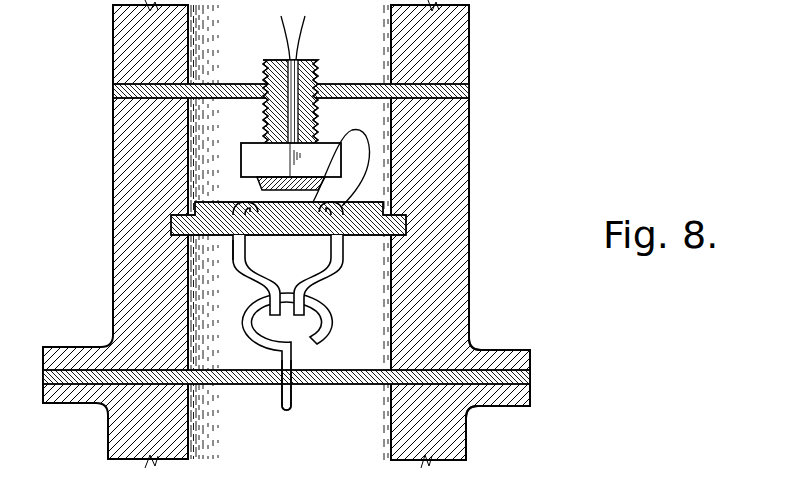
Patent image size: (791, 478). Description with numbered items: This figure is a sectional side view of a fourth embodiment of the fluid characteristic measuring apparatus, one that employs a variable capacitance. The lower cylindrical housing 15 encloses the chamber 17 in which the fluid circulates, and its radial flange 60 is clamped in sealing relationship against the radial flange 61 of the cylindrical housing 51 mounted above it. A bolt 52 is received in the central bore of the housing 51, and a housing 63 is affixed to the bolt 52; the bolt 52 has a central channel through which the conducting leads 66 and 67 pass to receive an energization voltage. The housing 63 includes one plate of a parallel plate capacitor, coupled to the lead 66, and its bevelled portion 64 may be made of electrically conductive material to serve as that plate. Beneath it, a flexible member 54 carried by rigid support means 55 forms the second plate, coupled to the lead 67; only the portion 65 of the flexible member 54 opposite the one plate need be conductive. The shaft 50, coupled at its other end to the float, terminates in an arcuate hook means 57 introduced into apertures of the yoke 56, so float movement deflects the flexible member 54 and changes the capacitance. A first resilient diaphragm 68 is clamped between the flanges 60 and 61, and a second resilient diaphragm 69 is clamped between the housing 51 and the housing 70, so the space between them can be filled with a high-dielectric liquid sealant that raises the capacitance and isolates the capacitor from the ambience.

The cylindrical housing 15 is at (466, 435).
The chamber 17 is at (300, 453).
The shaft 50 is at (293, 406).
The cylindrical housing 51 is at (470, 228).
The bolt 52 is at (318, 79).
The flexible member 54 is at (346, 206).
The rigid support means 55 is at (366, 238).
The yoke 56 is at (235, 265).
The arcuate hook means 57 is at (333, 322).
The radial flange 60 is at (531, 398).
The radial flange 61 is at (531, 363).
The housing 63 is at (241, 152).
The bevelled portion 64 is at (257, 181).
The portion of flexible member 65 is at (276, 227).
The conducting lead 66 is at (283, 28).
The conducting lead 67 is at (370, 140).
The first resilient diaphragm 68 is at (531, 380).
The second resilient diaphragm 69 is at (470, 97).
The cylindrical housing 70 is at (470, 46).